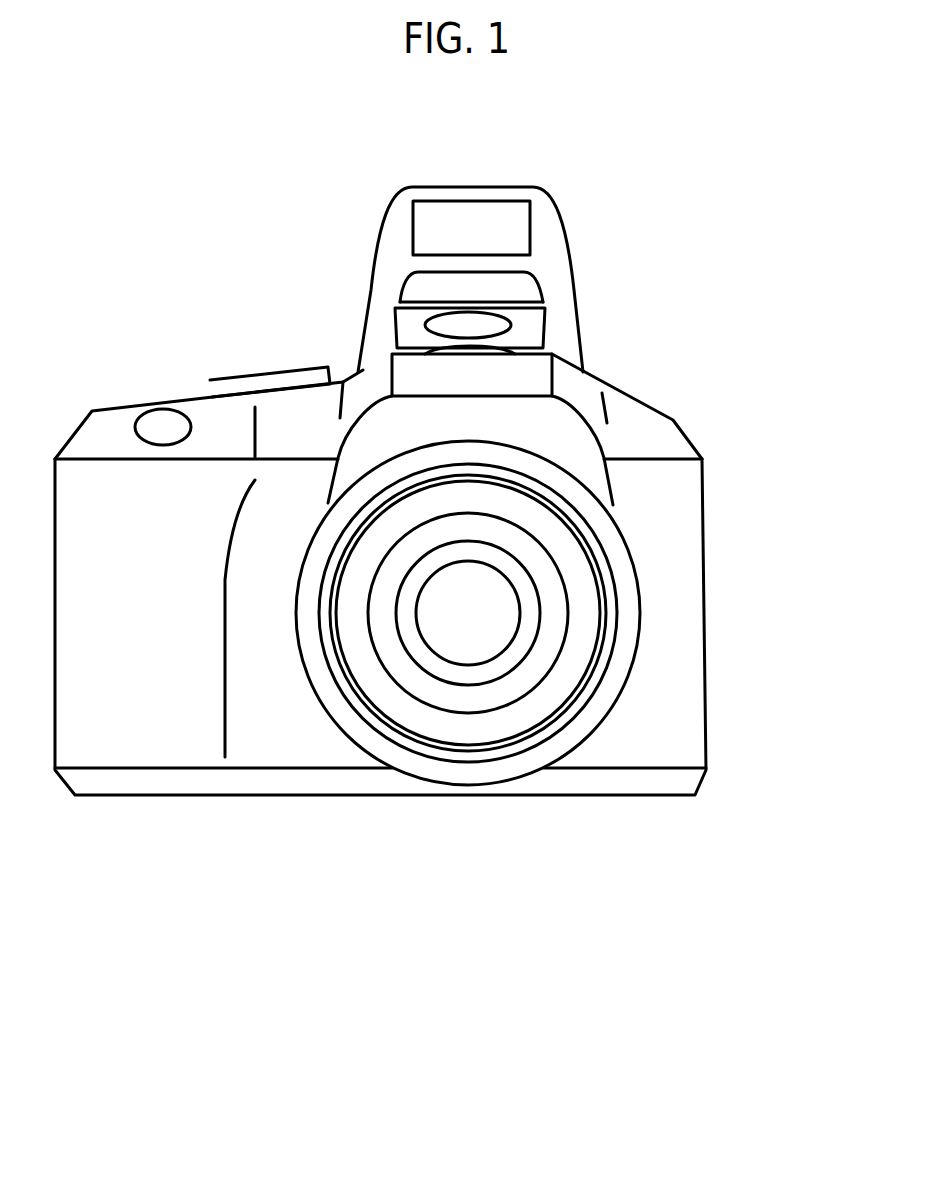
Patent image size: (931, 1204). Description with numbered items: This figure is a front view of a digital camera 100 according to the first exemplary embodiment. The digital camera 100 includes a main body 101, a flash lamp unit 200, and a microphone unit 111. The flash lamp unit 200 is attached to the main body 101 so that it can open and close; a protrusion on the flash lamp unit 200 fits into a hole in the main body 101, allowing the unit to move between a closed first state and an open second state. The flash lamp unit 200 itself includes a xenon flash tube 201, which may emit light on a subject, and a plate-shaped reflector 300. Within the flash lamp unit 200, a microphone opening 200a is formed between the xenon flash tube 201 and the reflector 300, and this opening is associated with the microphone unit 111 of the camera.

The digital camera 100 is at (128, 922).
The main body 101 is at (703, 535).
The microphone unit 111 is at (473, 350).
The flash lamp unit 200 is at (557, 225).
The microphone opening 200a is at (428, 287).
The xenon flash tube 201 is at (452, 226).
The reflector 300 is at (498, 325).